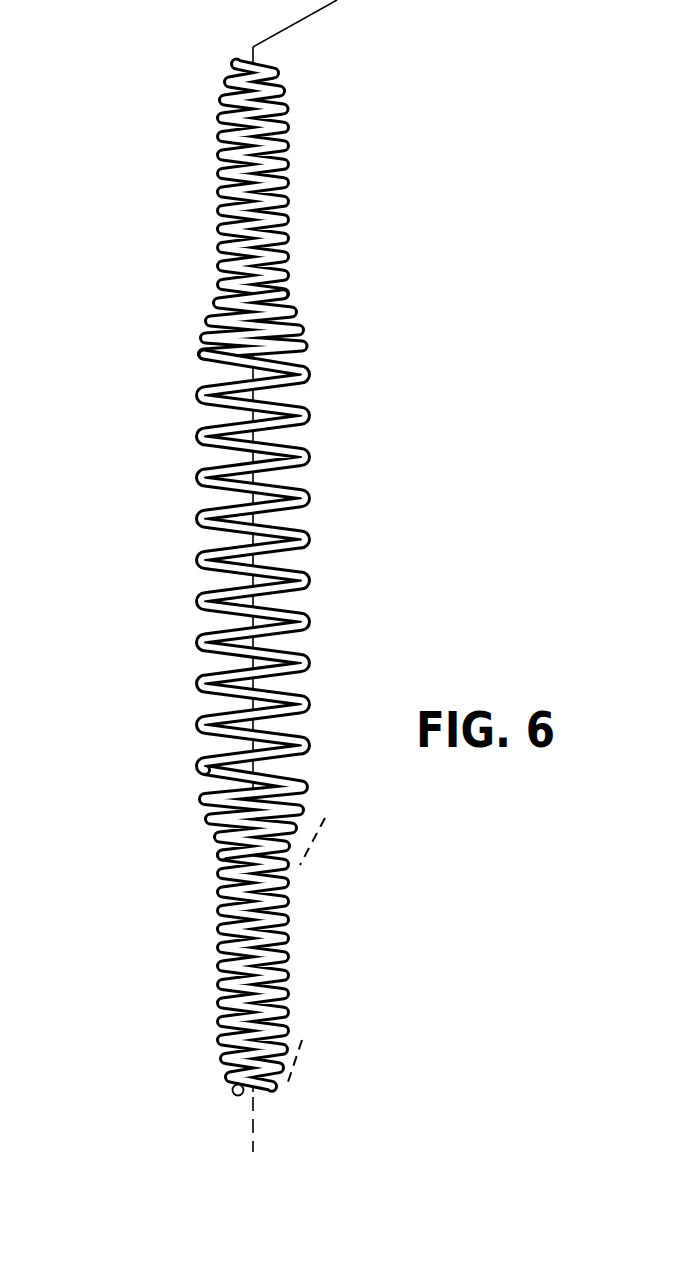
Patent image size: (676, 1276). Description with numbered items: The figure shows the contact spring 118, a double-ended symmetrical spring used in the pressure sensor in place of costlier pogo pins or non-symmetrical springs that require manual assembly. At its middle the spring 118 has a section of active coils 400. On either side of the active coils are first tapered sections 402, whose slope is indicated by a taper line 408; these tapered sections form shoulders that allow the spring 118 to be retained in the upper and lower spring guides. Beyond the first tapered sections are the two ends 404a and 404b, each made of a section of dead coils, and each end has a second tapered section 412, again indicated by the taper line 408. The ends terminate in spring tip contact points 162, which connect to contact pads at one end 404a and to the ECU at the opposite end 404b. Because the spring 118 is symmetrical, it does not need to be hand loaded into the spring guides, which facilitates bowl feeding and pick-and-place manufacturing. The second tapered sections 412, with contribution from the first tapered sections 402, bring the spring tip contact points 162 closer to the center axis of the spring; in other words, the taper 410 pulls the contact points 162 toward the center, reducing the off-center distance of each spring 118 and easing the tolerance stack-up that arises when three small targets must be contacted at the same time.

The contact spring 118 is at (461, 345).
The section of active coils 400 is at (324, 800).
The first tapered sections 402 is at (197, 308).
The end 404a is at (166, 72).
The end 404b is at (171, 925).
The taper line 408 is at (322, 830).
The taper 410 is at (307, 1038).
The second tapered sections 412 is at (290, 108).
The spring tip contact points 162 is at (232, 1090).